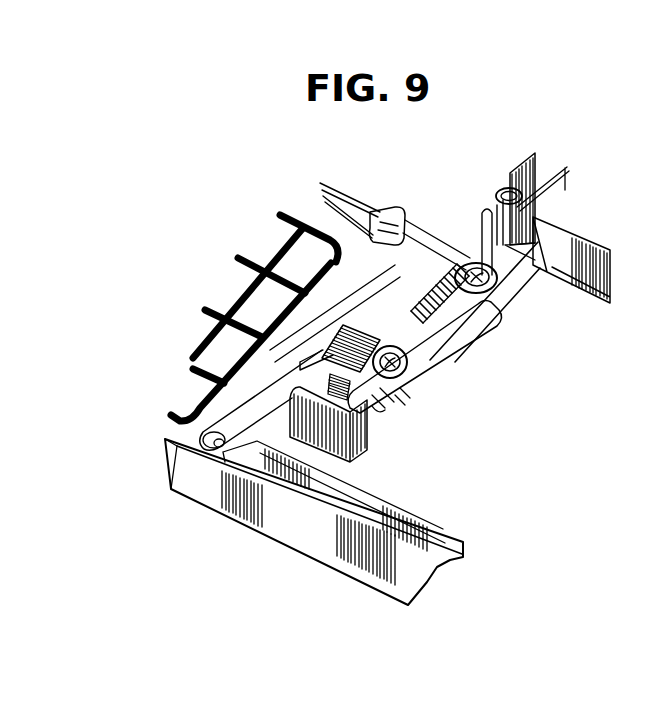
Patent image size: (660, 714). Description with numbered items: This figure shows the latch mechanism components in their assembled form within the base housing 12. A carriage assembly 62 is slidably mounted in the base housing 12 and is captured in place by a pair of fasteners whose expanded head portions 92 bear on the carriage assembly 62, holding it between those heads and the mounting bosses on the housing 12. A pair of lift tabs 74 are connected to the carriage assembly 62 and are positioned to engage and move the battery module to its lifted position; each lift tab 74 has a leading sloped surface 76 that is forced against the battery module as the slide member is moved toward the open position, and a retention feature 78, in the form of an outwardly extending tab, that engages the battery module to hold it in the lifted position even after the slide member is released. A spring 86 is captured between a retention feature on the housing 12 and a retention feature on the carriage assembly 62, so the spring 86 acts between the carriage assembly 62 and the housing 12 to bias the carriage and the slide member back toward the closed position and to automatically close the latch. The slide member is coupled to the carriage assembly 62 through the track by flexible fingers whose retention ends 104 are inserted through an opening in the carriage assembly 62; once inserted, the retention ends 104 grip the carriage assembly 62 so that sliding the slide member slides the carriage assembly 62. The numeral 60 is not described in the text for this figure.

The base housing 12 is at (543, 251).
The mounting rail 60 is at (505, 313).
The carriage assembly 62 is at (420, 347).
The lift tab 74 is at (477, 343).
The sloped surface 76 is at (503, 320).
The retention feature 78 is at (473, 340).
The spring 86 is at (437, 318).
The expanded head portion 92 is at (297, 250).
The retention end 104 is at (376, 248).